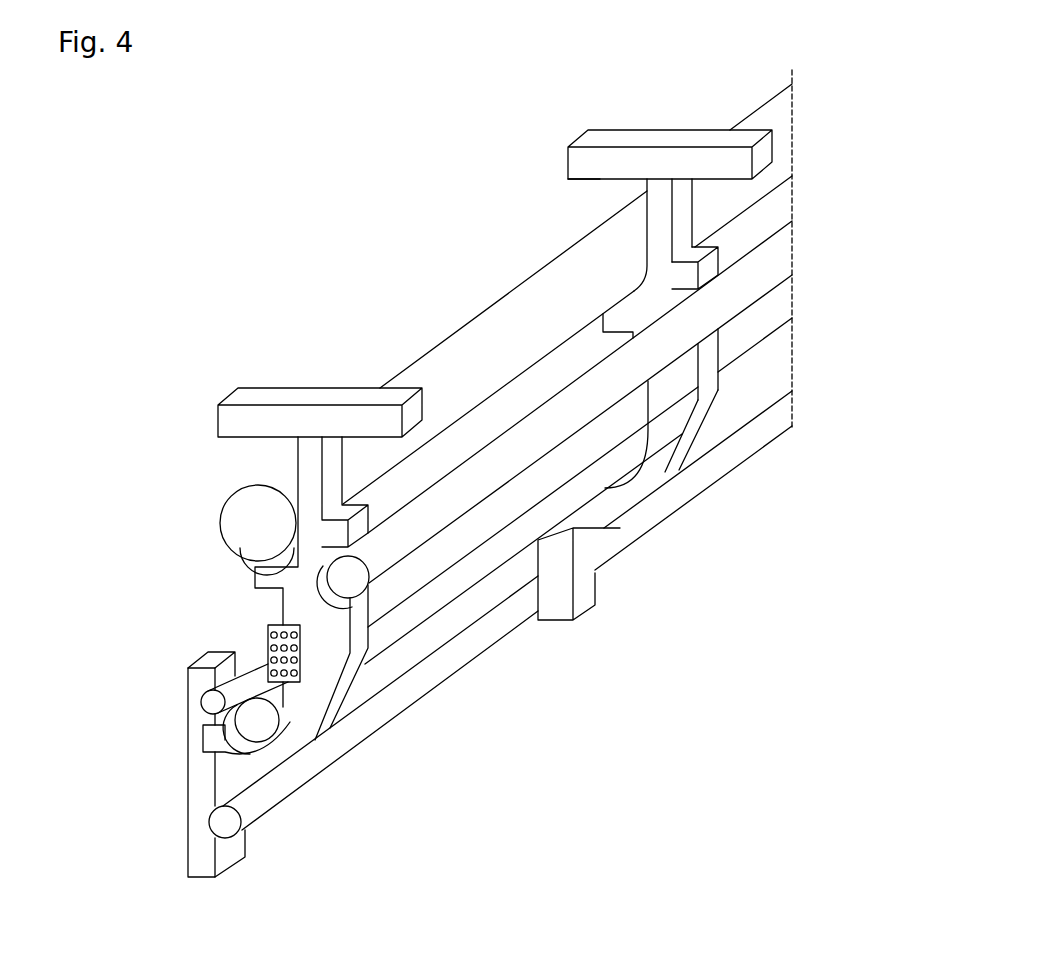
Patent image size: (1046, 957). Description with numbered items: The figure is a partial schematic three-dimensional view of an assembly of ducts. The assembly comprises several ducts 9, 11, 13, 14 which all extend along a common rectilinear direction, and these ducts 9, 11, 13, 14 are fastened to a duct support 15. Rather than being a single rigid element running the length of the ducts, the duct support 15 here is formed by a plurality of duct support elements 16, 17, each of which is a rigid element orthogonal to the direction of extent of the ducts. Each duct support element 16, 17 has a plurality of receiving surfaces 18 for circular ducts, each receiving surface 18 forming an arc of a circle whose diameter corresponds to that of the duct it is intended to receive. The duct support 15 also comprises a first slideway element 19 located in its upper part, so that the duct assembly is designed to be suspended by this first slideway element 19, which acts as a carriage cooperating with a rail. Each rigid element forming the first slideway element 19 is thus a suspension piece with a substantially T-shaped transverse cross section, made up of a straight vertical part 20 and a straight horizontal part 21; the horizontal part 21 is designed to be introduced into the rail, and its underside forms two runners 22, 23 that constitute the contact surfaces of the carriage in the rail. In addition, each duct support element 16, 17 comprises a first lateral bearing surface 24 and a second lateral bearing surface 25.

The duct 9 is at (780, 138).
The duct 11 is at (773, 413).
The duct 13 is at (257, 670).
The duct 14 is at (282, 627).
The duct support 15 is at (312, 716).
The duct support element 16 is at (340, 698).
The duct support element 17 is at (660, 468).
The receiving surface 18 is at (268, 536).
The first slideway element 19 is at (245, 425).
The vertical part 20 is at (653, 223).
The horizontal part 21 is at (580, 165).
The runner 22 is at (580, 190).
The runner 23 is at (723, 183).
The first lateral bearing surface 24 is at (188, 770).
The second lateral bearing surface 25 is at (690, 447).